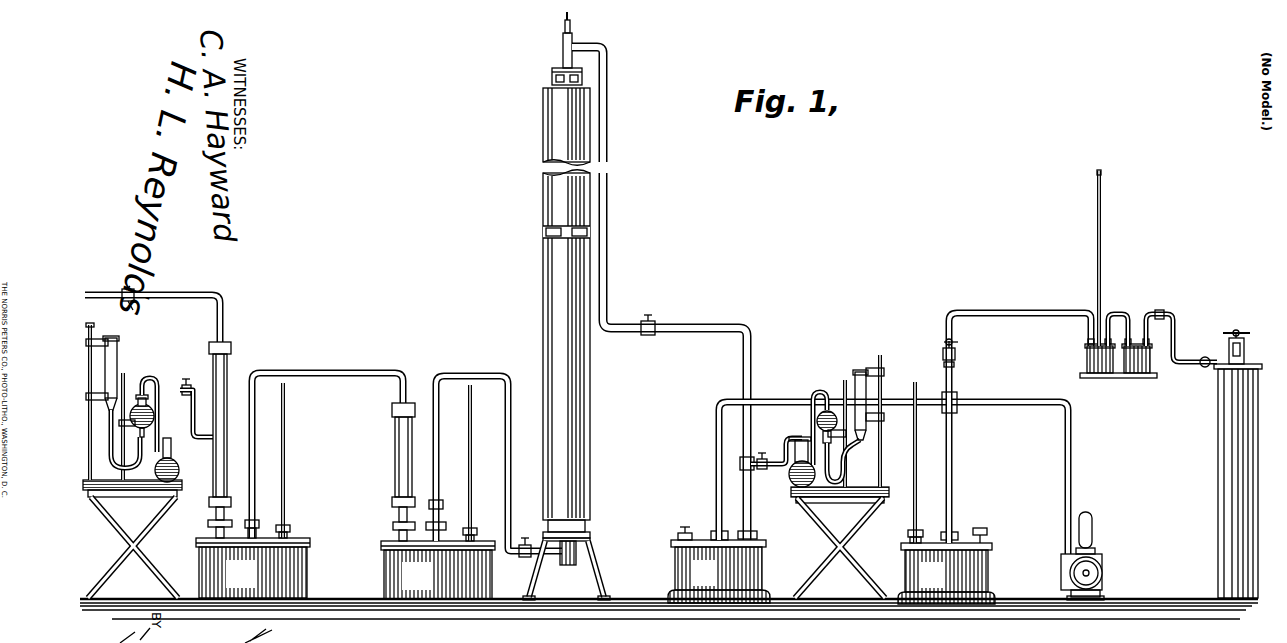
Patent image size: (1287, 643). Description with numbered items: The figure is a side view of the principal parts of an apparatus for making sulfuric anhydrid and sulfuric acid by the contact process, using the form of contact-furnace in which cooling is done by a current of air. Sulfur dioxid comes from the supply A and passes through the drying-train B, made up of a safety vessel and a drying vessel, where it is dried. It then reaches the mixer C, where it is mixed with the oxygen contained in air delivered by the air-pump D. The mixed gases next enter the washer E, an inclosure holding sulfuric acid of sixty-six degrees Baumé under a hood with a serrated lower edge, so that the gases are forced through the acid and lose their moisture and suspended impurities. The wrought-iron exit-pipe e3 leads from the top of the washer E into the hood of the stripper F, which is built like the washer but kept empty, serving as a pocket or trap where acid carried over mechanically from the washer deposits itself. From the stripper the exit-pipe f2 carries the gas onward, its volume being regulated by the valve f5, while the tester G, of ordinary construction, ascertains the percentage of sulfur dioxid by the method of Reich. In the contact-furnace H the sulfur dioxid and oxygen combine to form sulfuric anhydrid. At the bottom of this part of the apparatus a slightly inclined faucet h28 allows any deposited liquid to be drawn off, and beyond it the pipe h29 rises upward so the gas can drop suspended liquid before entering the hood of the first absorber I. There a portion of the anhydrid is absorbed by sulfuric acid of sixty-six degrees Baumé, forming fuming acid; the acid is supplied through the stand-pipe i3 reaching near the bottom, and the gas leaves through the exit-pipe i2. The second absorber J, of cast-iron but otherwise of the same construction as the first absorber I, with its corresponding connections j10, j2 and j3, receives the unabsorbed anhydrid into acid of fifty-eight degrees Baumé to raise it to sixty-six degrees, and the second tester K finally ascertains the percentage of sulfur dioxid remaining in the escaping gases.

The supply of sulfur dioxid A is at (1250, 486).
The drying-train B is at (1148, 285).
The mixer C is at (952, 414).
The air-pump D is at (1091, 556).
The washer E is at (946, 493).
The stripper F is at (719, 565).
The tester G is at (843, 384).
The contact-furnace H is at (545, 277).
The first absorber I is at (438, 570).
The second absorber J is at (253, 568).
The second tester K is at (152, 367).
The exit-pipe e3 is at (716, 490).
The exit-pipe f2 is at (754, 510).
The valve f5 is at (648, 321).
The faucet h28 is at (528, 556).
The pipe h29 is at (510, 463).
The exit-pipe i2 is at (330, 442).
The stand-pipe i3 is at (470, 492).
The pipe j10 is at (227, 467).
The inlet fitting j2 is at (211, 526).
The rod j3 is at (289, 493).